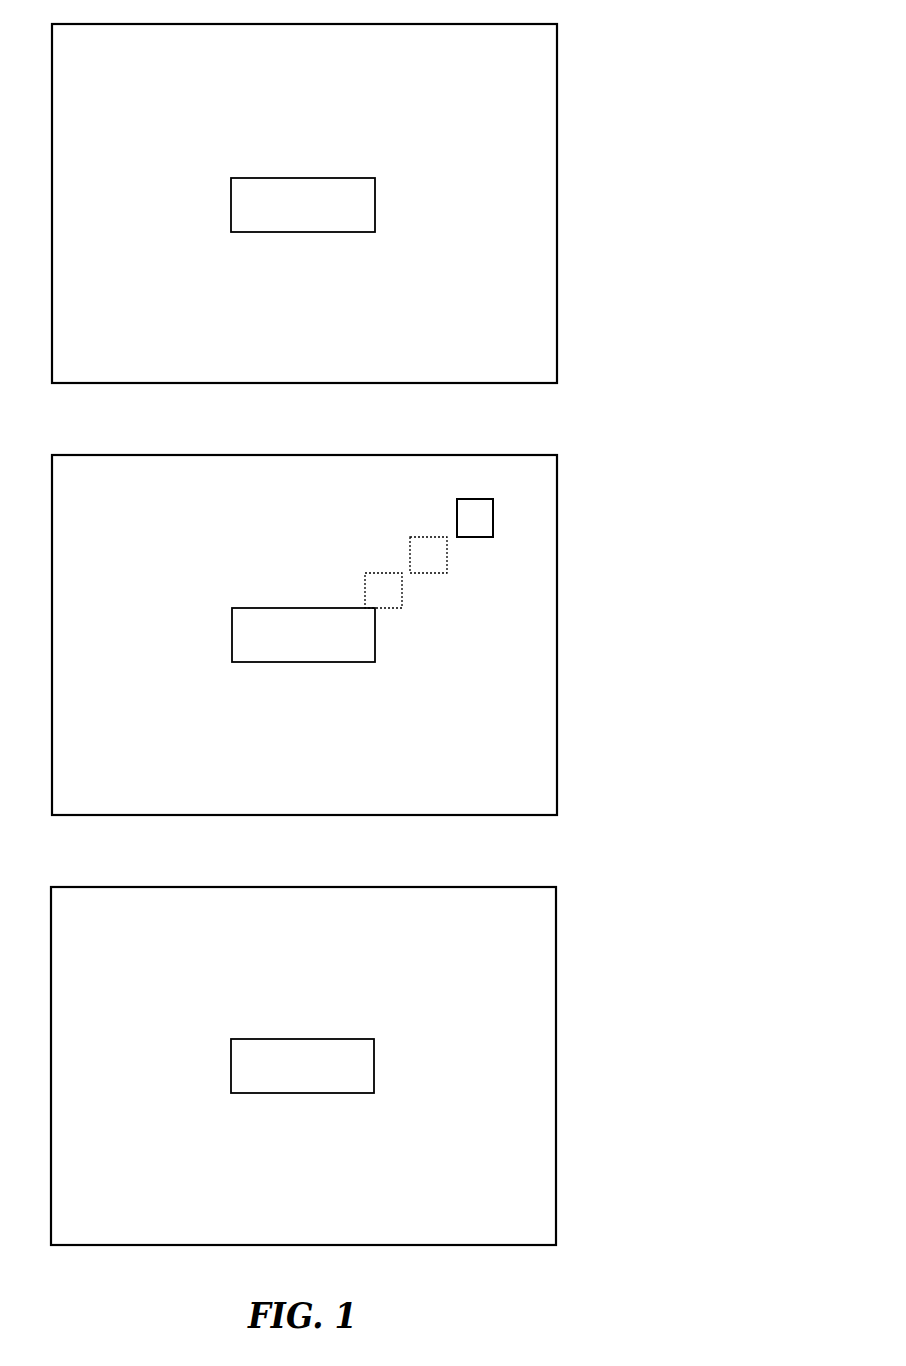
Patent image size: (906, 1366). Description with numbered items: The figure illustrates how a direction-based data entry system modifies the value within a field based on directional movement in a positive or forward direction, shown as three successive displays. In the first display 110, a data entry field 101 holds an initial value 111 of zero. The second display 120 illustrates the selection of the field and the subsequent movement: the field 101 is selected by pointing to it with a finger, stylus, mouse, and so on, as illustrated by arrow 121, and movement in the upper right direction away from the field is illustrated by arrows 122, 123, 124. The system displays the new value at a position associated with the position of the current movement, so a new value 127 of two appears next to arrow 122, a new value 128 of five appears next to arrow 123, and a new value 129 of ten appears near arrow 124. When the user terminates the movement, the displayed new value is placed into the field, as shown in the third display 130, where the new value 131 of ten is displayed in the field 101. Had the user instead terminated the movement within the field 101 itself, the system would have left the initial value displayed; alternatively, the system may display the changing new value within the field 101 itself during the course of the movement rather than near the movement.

The display 110 is at (304, 193).
The display 120 is at (304, 625).
The display 130 is at (303, 1056).
The data entry field 101 is at (375, 178).
The initial value 111 is at (296, 205).
The arrow 121 is at (322, 645).
The arrow 122 is at (367, 617).
The arrow 123 is at (410, 582).
The arrow 124 is at (457, 545).
The new value 127 is at (386, 573).
The new value 128 is at (428, 537).
The new value 129 is at (493, 519).
The new value 131 is at (290, 1067).